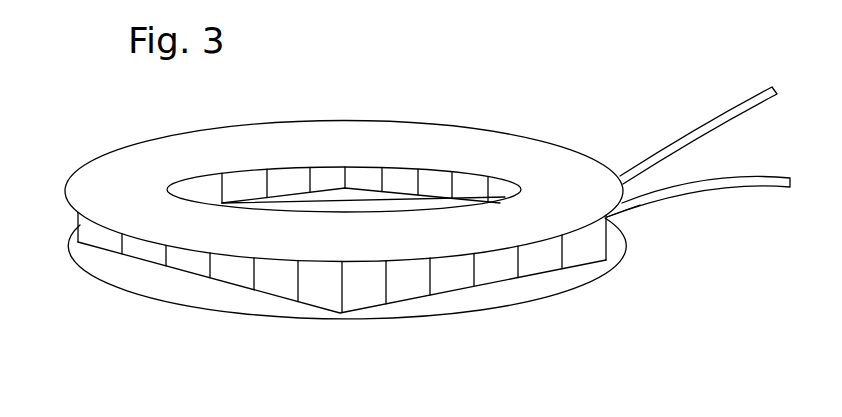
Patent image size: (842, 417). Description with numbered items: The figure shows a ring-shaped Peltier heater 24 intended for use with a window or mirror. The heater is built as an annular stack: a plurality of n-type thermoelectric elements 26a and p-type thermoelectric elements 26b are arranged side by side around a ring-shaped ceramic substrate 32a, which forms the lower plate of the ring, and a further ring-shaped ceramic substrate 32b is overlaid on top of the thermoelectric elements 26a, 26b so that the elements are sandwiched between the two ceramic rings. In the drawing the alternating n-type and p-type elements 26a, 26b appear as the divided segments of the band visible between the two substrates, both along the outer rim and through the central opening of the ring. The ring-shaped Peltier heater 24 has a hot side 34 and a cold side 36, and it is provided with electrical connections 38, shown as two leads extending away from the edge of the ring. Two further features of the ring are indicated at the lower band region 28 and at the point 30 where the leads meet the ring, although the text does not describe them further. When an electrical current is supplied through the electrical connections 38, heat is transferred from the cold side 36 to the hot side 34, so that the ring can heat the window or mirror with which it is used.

The ring-shaped Peltier heater 24 is at (438, 106).
The n-type thermoelectric element 26a is at (312, 293).
The p-type thermoelectric element 26b is at (270, 280).
The base layer 28 is at (585, 264).
The connection point 30 is at (613, 219).
The ring-shaped ceramic substrate 32a is at (145, 282).
The further ring-shaped ceramic substrate 32b is at (125, 168).
The hot side 34 is at (499, 312).
The cold side 36 is at (504, 161).
The electrical connections 38 is at (697, 187).